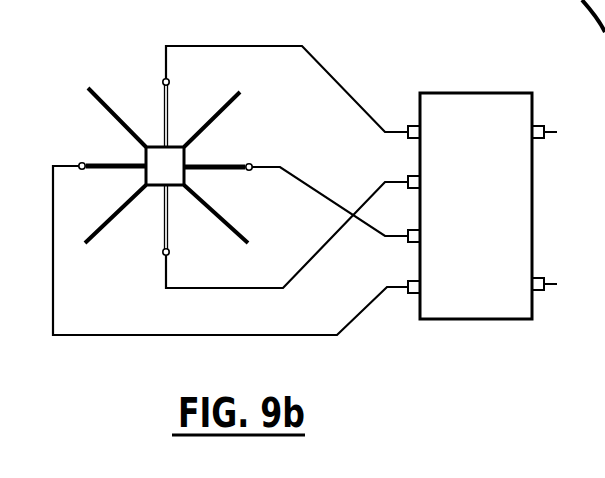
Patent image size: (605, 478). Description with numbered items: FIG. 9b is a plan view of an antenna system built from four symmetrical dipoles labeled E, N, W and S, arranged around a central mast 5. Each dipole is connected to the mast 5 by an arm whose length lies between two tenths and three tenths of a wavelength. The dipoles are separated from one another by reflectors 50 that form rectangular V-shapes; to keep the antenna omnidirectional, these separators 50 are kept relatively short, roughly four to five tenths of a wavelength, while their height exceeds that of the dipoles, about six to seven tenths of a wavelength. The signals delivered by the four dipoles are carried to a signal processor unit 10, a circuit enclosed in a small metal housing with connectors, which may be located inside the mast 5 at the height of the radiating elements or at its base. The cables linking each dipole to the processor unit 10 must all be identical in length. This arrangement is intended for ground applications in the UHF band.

The reflectors 50 is at (103, 95).
The mast 5 is at (150, 187).
The signal processor unit 10 is at (483, 93).